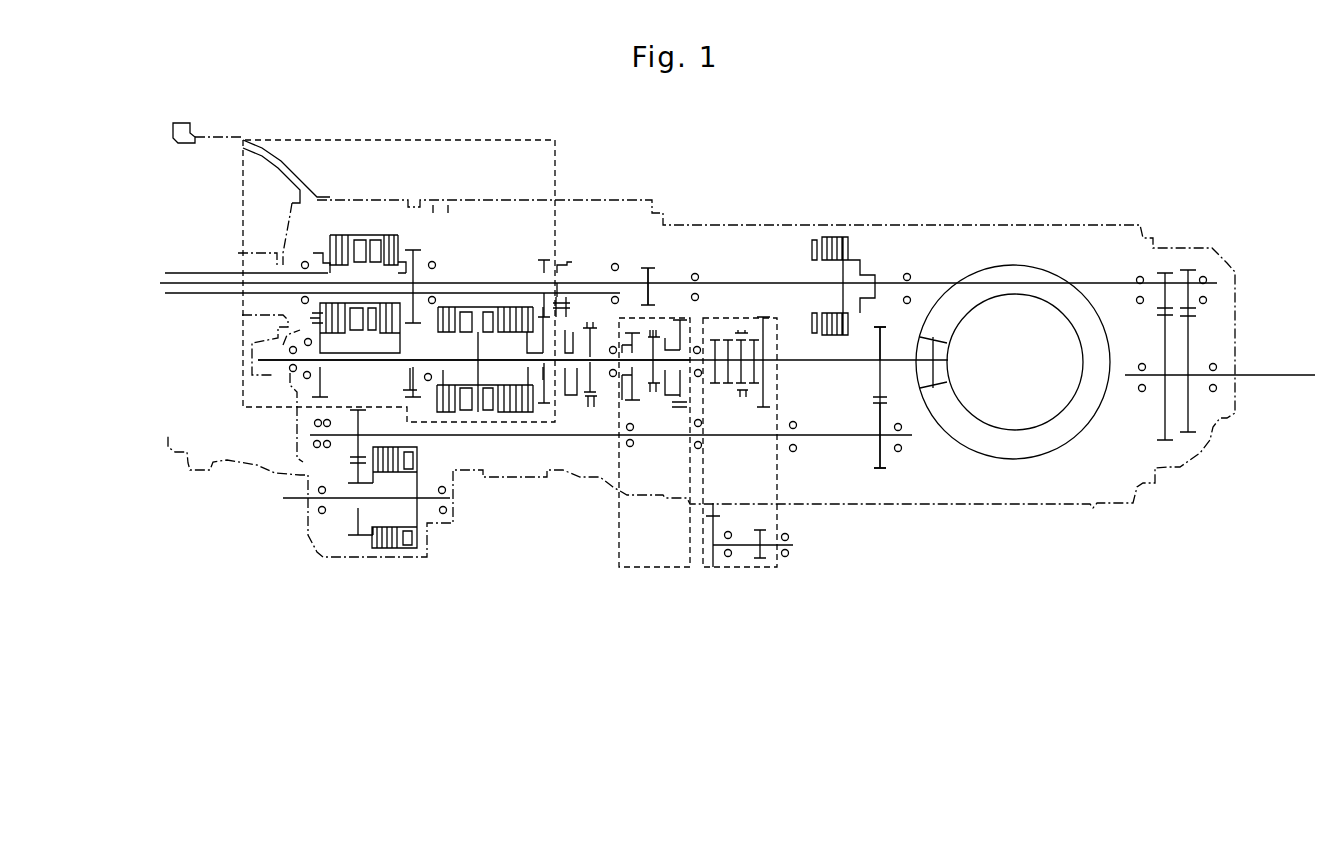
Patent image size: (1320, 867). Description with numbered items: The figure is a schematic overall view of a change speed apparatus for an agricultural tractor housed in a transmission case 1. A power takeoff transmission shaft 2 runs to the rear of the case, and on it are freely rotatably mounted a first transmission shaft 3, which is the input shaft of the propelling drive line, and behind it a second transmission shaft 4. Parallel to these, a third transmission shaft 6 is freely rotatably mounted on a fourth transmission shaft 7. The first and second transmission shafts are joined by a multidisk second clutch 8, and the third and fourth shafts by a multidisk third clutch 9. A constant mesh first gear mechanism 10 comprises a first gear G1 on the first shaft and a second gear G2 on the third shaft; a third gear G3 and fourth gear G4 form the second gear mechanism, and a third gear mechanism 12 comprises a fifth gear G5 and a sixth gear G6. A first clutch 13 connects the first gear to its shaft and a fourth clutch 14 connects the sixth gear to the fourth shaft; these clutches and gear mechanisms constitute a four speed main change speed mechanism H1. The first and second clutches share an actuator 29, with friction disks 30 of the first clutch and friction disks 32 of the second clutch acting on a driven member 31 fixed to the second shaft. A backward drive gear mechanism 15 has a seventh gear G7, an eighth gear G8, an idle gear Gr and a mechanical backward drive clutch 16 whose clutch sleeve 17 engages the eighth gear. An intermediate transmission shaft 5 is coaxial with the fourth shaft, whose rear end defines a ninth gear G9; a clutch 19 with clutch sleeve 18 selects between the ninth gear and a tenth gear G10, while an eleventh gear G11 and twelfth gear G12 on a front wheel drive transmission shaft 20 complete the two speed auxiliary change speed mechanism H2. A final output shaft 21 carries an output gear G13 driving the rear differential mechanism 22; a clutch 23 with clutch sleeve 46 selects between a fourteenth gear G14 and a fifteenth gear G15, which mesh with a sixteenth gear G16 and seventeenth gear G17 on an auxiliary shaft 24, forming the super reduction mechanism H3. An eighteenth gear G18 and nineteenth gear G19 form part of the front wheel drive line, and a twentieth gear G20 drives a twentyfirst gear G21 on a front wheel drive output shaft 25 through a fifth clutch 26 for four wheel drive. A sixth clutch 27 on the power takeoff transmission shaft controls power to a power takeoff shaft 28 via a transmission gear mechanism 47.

The transmission case 1 is at (548, 143).
The power takeoff transmission shaft 2 is at (720, 337).
The first transmission shaft 3 is at (215, 271).
The second transmission shaft 4 is at (487, 273).
The intermediate transmission shaft 5 is at (680, 357).
The third transmission shaft 6 is at (350, 365).
The fourth transmission shaft 7 is at (285, 352).
The second clutch 8 is at (385, 240).
The third clutch 9 is at (443, 410).
The first gear mechanism 10 is at (188, 316).
The third gear mechanism 12 is at (493, 235).
The first clutch 13 is at (345, 235).
The fourth clutch 14 is at (518, 413).
The backward drive gear mechanism 15 is at (578, 235).
The backward drive clutch 16 is at (578, 400).
The clutch sleeve 17 is at (590, 402).
The clutch sleeve 18 is at (655, 335).
The clutch 19 is at (657, 398).
The front wheel drive transmission shaft 20 is at (312, 437).
The final output shaft 21 is at (858, 347).
The rear differential mechanism 22 is at (1032, 410).
The clutch 23 is at (742, 401).
The auxiliary shaft 24 is at (748, 543).
The front wheel drive output shaft 25 is at (297, 507).
The fifth clutch 26 is at (390, 550).
The sixth clutch 27 is at (840, 237).
The power takeoff shaft 28 is at (1268, 378).
The actuator 29 is at (360, 240).
The friction disks 30 is at (330, 247).
The driven member 31 is at (413, 248).
The friction disks 32 is at (396, 245).
The clutch sleeve 46 is at (753, 333).
The transmission gear mechanism 47 is at (1200, 343).
The first gear G1 is at (312, 305).
The second gear G2 is at (317, 325).
The third gear G3 is at (430, 313).
The fourth gear G4 is at (433, 305).
The fifth gear G5 is at (544, 257).
The sixth gear G6 is at (543, 317).
The seventh gear G7 is at (570, 333).
The idle gear Gr is at (590, 320).
The eighth gear G8 is at (574, 330).
The ninth gear G9 is at (636, 333).
The tenth gear G10 is at (683, 340).
The eleventh gear G11 is at (640, 475).
The twelfth gear G12 is at (678, 463).
The output gear G13 is at (923, 390).
The fourteenth gear G14 is at (720, 337).
The fifteenth gear G15 is at (765, 388).
The sixteenth gear G16 is at (710, 517).
The seventeenth gear G17 is at (763, 558).
The eighteenth gear G18 is at (890, 330).
The nineteenth gear G19 is at (885, 472).
The twentieth gear G20 is at (352, 450).
The twentyfirst gear G21 is at (353, 537).
The main change speed mechanism H1 is at (372, 130).
The auxiliary change speed mechanism H2 is at (654, 458).
The super reduction mechanism H3 is at (740, 464).